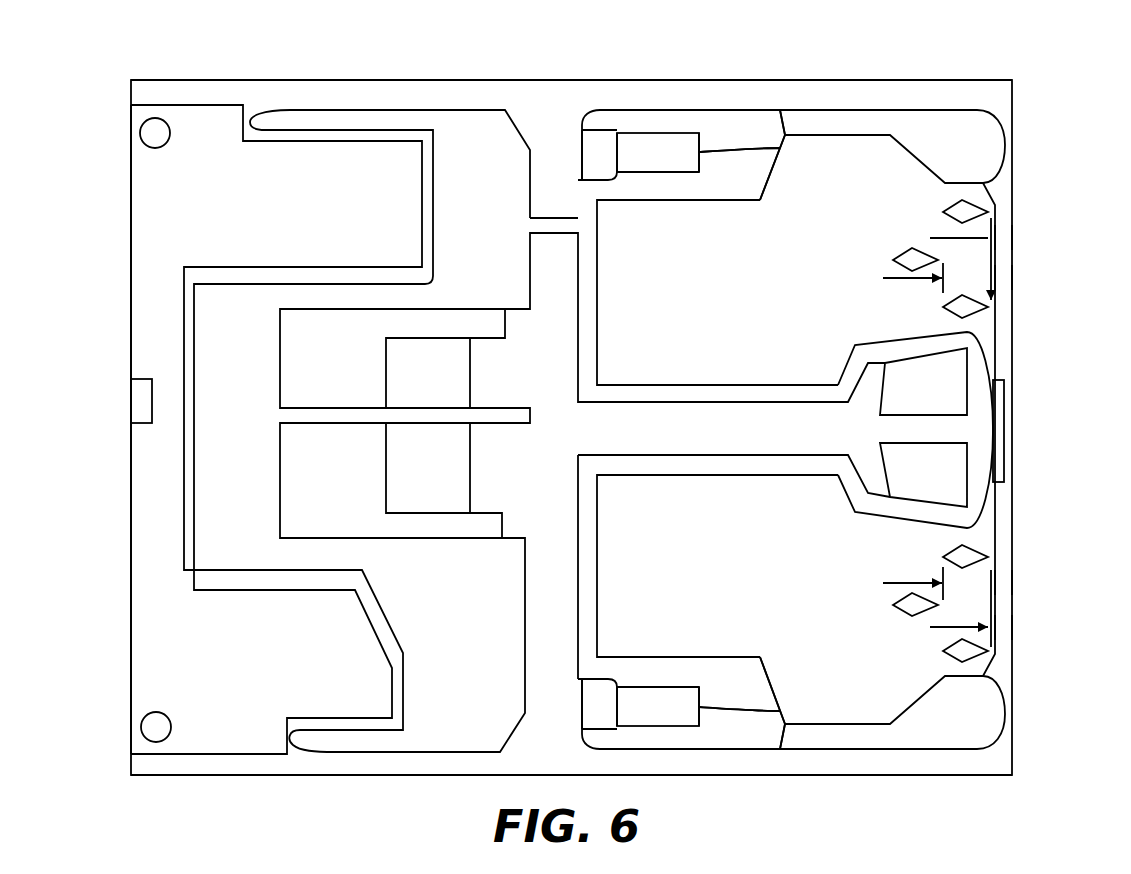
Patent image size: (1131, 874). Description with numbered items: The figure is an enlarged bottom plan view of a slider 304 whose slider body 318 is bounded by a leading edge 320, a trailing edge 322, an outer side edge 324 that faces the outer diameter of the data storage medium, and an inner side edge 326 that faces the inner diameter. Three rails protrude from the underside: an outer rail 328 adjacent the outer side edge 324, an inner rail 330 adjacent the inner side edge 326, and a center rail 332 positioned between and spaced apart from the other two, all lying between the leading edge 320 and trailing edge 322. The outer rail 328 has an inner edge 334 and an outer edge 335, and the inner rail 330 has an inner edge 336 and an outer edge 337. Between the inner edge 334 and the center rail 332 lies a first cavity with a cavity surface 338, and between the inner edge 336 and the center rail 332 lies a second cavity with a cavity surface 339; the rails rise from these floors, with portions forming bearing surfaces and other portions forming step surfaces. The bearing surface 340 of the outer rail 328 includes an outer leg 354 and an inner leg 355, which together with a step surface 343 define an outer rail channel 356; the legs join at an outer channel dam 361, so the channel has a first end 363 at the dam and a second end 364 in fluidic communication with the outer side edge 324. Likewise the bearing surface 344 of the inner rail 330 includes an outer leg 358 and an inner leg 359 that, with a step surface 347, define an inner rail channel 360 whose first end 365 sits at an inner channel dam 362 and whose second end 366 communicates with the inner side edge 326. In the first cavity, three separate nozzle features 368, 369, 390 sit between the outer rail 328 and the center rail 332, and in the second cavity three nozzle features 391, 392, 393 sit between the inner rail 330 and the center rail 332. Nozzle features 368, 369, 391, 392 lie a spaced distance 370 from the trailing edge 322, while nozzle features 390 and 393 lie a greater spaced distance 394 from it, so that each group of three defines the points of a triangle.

The slider 304 is at (1022, 52).
The slider body 318 is at (128, 520).
The leading edge 320 is at (131, 340).
The trailing edge 322 is at (1013, 452).
The outer side edge 324 is at (562, 80).
The inner side edge 326 is at (458, 776).
The outer rail 328 is at (727, 106).
The inner rail 330 is at (773, 751).
The center rail 332 is at (843, 488).
The inner edge 334 is at (745, 202).
The outer edge 335 is at (778, 108).
The inner edge 336 is at (742, 655).
The outer edge 337 is at (750, 749).
The cavity surface 338 is at (717, 292).
The cavity surface 339 is at (717, 566).
The bearing surface 340 is at (742, 167).
The step surface 343 is at (658, 152).
The bearing surface 344 is at (742, 697).
The step surface 347 is at (658, 706).
The outer leg 354 is at (648, 113).
The inner leg 355 is at (657, 188).
The outer rail channel 356 is at (632, 150).
The outer leg 358 is at (638, 733).
The inner leg 359 is at (654, 670).
The inner rail channel 360 is at (627, 703).
The outer channel dam 361 is at (768, 150).
The inner channel dam 362 is at (773, 700).
The first end 363 is at (697, 158).
The second end 364 is at (590, 148).
The first end 365 is at (693, 695).
The second end 366 is at (590, 718).
The nozzle feature 368 is at (950, 215).
The nozzle feature 369 is at (950, 313).
The spaced distance 370 is at (1014, 238).
The nozzle feature 390 is at (902, 258).
The nozzle feature 391 is at (950, 558).
The nozzle feature 392 is at (950, 652).
The nozzle feature 393 is at (903, 610).
The spaced distance 394 is at (1014, 278).